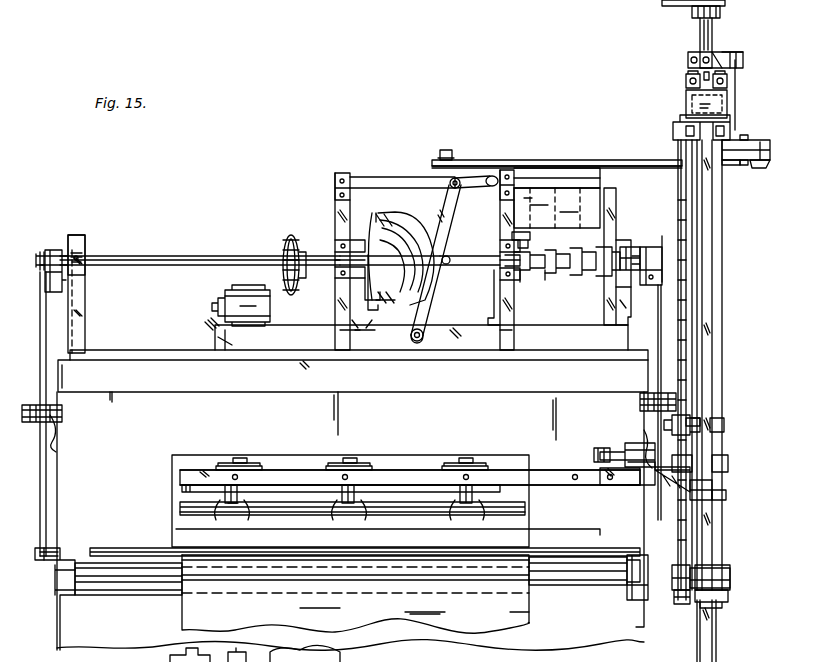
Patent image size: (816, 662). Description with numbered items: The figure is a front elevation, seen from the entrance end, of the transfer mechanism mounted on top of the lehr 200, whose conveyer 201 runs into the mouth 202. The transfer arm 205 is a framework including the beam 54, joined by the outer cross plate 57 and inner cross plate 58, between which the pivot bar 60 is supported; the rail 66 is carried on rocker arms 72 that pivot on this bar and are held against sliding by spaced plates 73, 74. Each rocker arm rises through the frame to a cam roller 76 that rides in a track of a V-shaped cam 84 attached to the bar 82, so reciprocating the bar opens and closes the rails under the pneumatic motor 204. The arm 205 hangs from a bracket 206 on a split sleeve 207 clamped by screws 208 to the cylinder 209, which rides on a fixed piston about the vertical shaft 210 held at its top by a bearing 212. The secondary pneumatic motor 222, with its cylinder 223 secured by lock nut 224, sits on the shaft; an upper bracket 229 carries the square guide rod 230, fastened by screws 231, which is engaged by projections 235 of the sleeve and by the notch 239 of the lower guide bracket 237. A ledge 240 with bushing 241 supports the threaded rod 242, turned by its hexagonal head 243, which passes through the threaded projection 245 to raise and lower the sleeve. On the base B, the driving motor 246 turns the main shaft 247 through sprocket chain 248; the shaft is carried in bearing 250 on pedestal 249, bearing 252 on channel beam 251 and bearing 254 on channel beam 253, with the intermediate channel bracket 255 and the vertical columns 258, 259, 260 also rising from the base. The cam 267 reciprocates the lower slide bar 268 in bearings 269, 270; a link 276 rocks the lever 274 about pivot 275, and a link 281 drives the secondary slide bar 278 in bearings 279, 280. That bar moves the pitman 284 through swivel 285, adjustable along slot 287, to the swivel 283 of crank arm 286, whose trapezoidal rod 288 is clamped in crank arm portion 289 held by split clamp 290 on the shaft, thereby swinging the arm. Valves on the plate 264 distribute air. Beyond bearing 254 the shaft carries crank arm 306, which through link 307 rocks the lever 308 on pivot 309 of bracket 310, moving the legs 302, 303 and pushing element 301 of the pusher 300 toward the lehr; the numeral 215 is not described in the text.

The beam 54 is at (200, 467).
The cross plate 57 is at (182, 490).
The cross plate 58 is at (560, 480).
The pivot bar 60 is at (352, 518).
The rail 66 is at (304, 508).
The rocker arm 72 is at (358, 512).
The spaced plate 73 is at (248, 506).
The spaced plate 74 is at (226, 500).
The cam roller 76 is at (240, 456).
The bar 82 is at (282, 468).
The V-shaped cam 84 is at (244, 464).
The lehr 200 is at (47, 469).
The conveyer 201 is at (374, 594).
The mouth 202 is at (172, 530).
The pneumatic motor 204 is at (630, 443).
The arm 205 is at (400, 454).
The bracket 206 is at (668, 478).
The split sleeve 207 is at (723, 441).
The clamping screw 208 is at (728, 424).
The cylinder 209 is at (724, 370).
The vertical shaft 210 is at (714, 28).
The bearing 212 is at (690, 12).
The nut 215 is at (730, 594).
The secondary pneumatic motor 222 is at (684, 98).
The cylinder 223 is at (692, 104).
The lock nut 224 is at (728, 70).
The upper bracket 229 is at (686, 80).
The guide rod 230 is at (712, 244).
The screw 231 is at (744, 58).
The projection 235 is at (700, 425).
The lower guide bracket 237 is at (732, 578).
The squared notch 239 is at (725, 570).
The ledge 240 is at (642, 590).
The bushing 241 is at (672, 596).
The threaded rod 242 is at (690, 218).
The hexagonal head 243 is at (684, 606).
The threaded projection 245 is at (702, 423).
The driving motor 246 is at (255, 288).
The main shaft 247 is at (190, 258).
The sprocket chain 248 is at (294, 238).
The pedestal 249 is at (88, 308).
The bearing 250 is at (80, 240).
The channel beam 251 is at (356, 340).
The bearing 252 is at (360, 240).
The channel-shaped beam 253 is at (638, 302).
The bearing 254 is at (630, 244).
The channel bracket 255 is at (495, 300).
The vertical column 258 is at (345, 330).
The vertical column 259 is at (504, 342).
The vertical column 260 is at (608, 330).
The plate 264 is at (594, 205).
The cam 267 is at (405, 200).
The lower slide bar 268 is at (550, 275).
The bearing 269 is at (338, 275).
The bearing 270 is at (524, 275).
The lever 274 is at (440, 345).
The pivot 275 is at (415, 342).
The link 276 is at (462, 255).
The secondary slide bar 278 is at (545, 178).
The bearing 279 is at (336, 178).
The bearing 280 is at (508, 172).
The link 281 is at (478, 175).
The swivel 283 is at (740, 165).
The pitman 284 is at (615, 162).
The swivel 285 is at (448, 150).
The crank arm 286 is at (770, 175).
The slot 287 is at (760, 142).
The trapezoidal rod 288 is at (738, 128).
The crank arm portion 289 is at (745, 66).
The split clamp 290 is at (690, 56).
The pusher device 300 is at (120, 538).
The primary pushing element 301 is at (598, 520).
The side leg 302 is at (48, 562).
The side leg 303 is at (700, 506).
The crank arm 306 is at (52, 248).
The link 307 is at (40, 250).
The lever 308 is at (40, 327).
The pivot 309 is at (30, 405).
The bracket 310 is at (57, 430).
The base B is at (220, 337).